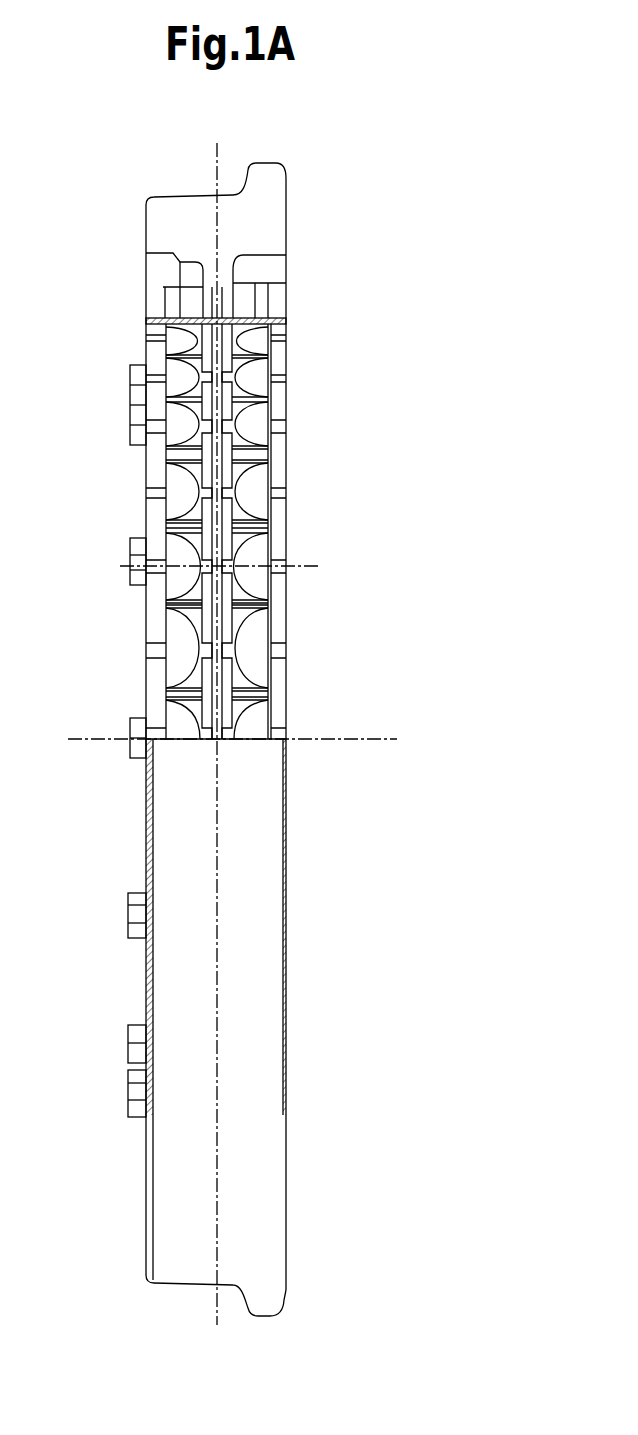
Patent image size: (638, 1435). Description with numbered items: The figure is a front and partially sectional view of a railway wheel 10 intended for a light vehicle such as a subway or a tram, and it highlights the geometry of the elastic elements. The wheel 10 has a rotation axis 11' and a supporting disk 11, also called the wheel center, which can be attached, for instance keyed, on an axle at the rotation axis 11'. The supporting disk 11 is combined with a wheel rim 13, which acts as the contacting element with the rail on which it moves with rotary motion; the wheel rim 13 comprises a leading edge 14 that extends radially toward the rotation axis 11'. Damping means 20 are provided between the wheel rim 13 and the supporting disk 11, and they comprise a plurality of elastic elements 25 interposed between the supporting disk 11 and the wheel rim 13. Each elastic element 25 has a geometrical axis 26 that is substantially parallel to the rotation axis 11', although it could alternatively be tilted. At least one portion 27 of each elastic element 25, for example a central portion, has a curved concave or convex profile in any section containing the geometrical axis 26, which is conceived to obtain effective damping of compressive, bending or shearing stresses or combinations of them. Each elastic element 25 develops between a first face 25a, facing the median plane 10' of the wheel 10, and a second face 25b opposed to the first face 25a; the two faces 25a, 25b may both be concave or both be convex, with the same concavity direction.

The wheel 10 is at (318, 739).
The median plane 10' is at (258, 720).
The supporting disk 11 is at (174, 274).
The rotation axis 11' is at (232, 764).
The wheel rim 13 is at (163, 220).
The leading edge 14 is at (215, 297).
The damping means 20 is at (171, 531).
The elastic element 25 is at (213, 531).
The first face 25a is at (220, 573).
The second face 25b is at (262, 592).
The geometrical axis 26 is at (302, 566).
The concave or convex portion 27 is at (190, 490).